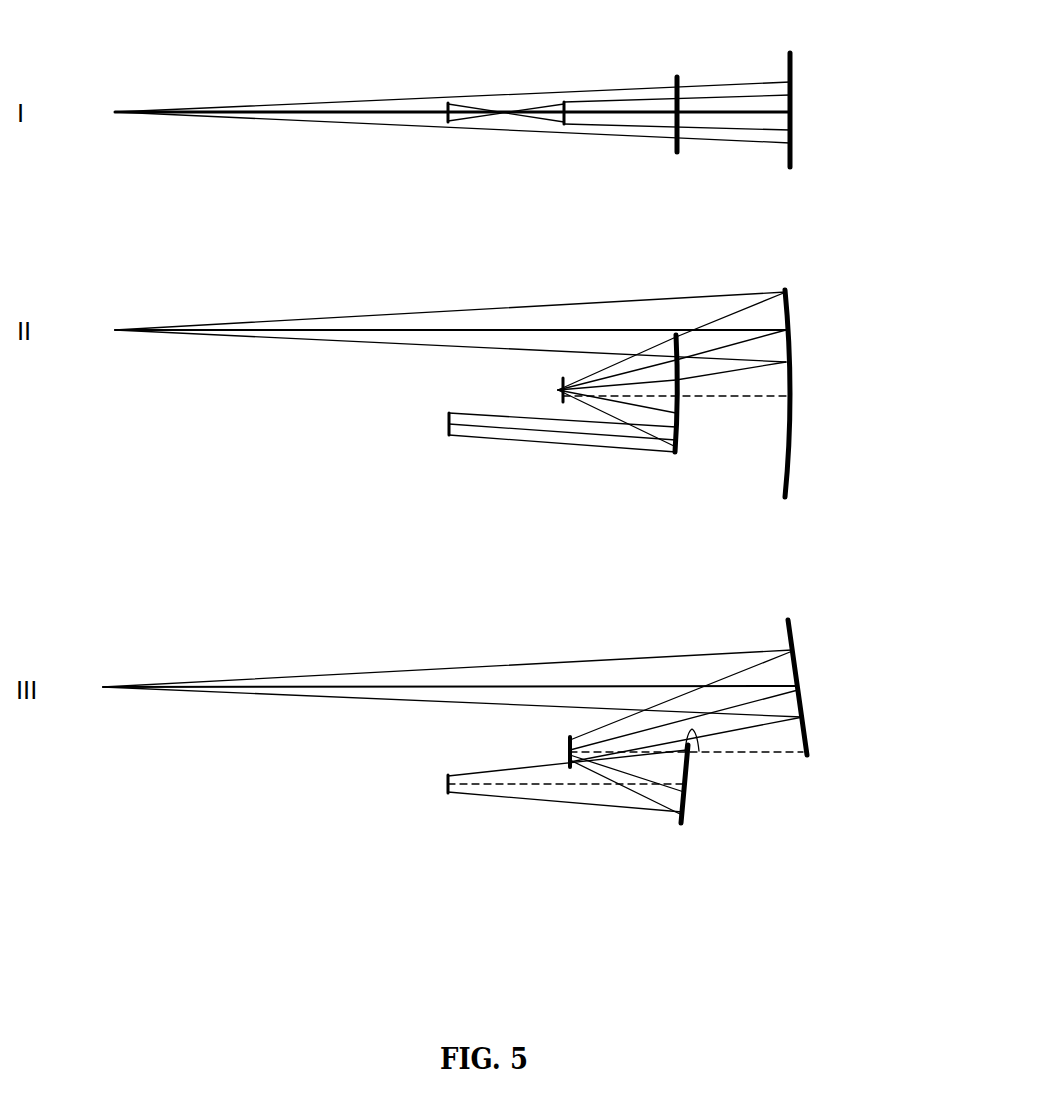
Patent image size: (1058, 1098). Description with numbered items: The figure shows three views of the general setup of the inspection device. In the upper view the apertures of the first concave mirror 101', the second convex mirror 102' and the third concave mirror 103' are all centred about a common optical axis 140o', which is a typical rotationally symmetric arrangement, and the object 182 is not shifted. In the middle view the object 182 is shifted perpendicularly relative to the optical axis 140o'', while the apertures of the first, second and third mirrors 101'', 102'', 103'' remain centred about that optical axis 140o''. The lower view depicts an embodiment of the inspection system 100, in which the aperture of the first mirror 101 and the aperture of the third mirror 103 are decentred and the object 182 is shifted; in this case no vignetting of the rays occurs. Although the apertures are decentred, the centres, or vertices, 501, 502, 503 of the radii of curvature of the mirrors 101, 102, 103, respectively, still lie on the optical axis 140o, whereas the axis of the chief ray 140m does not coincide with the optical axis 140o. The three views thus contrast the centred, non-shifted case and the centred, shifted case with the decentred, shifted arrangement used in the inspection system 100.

The inspection system 100 is at (318, 645).
The first concave mirror 101 is at (705, 816).
The first concave mirror 101' is at (723, 88).
The secondary mirror (second configuration) 101'' is at (717, 410).
The second convex mirror 102 is at (480, 728).
The second convex mirror 102' is at (508, 139).
The detector (second configuration) 102'' is at (499, 384).
The third concave mirror 103 is at (842, 683).
The third concave mirror 103' is at (855, 110).
The primary mirror (second configuration) 103'' is at (860, 393).
The chief ray 140m is at (602, 683).
The optical axis 140o is at (785, 820).
The common optical axis 140o' is at (773, 71).
The optical axis 140o'' is at (778, 361).
The object 182 is at (447, 106).
The centre of radius of curvature of first mirror 501 is at (700, 750).
The centre of radius of curvature of second mirror 502 is at (569, 753).
The centre of radius of curvature of third mirror 503 is at (797, 755).